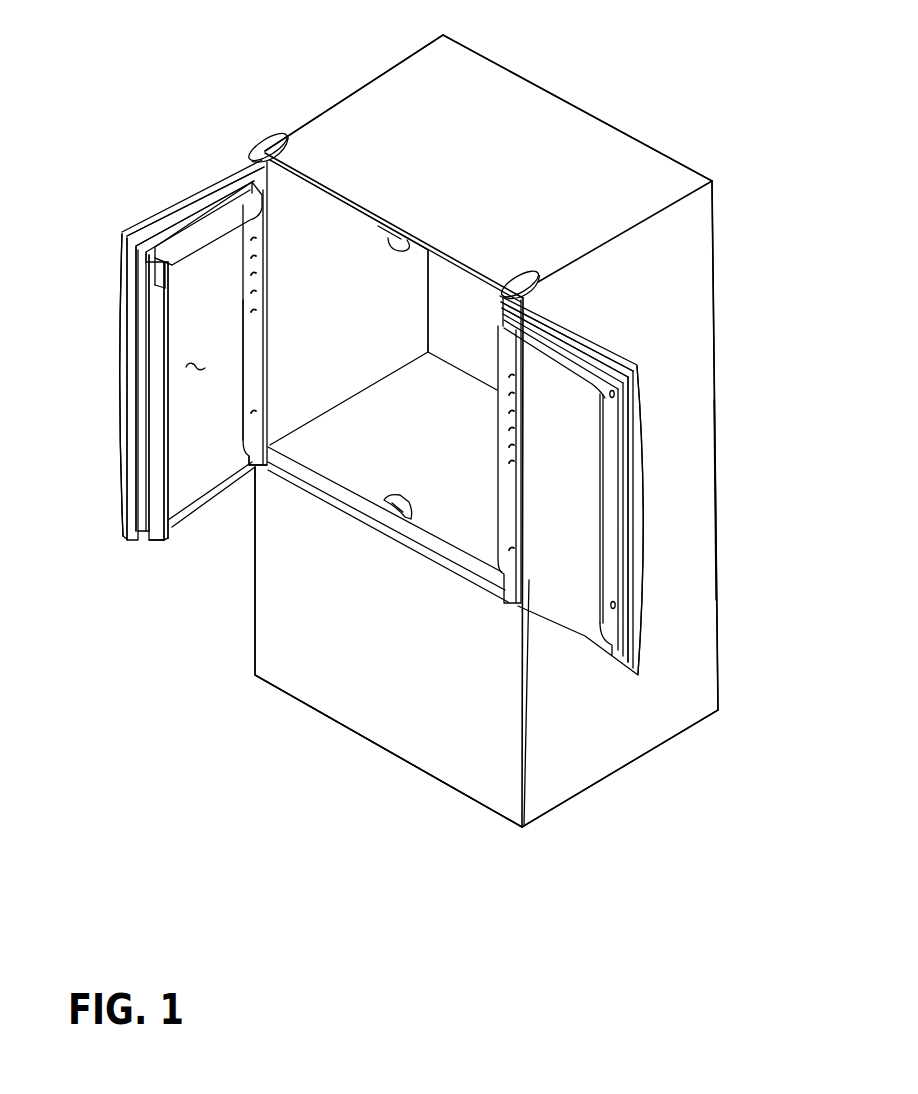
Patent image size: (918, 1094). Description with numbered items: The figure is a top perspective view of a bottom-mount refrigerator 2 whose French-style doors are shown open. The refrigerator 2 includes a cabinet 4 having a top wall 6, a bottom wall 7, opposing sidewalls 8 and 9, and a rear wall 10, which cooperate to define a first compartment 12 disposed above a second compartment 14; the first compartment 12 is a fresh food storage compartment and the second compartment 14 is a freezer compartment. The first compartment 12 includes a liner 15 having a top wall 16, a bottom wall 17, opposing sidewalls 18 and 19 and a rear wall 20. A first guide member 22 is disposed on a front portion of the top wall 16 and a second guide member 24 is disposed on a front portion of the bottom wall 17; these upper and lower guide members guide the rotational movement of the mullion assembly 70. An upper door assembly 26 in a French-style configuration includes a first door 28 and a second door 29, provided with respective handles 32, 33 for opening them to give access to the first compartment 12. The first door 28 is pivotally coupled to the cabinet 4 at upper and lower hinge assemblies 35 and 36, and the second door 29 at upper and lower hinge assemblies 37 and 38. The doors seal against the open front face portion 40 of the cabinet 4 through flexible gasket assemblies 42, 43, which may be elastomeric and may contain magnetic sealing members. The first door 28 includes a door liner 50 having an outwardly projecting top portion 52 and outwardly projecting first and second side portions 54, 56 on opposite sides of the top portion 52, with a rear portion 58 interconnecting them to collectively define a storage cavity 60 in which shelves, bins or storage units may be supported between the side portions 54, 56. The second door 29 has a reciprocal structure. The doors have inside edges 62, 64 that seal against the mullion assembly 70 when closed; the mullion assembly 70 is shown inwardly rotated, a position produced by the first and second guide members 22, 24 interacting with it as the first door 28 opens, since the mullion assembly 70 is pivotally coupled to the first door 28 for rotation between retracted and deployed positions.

The bottom-mount refrigerator 2 is at (287, 84).
The cabinet 4 is at (631, 137).
The top wall 6 is at (548, 130).
The bottom wall 7 is at (592, 790).
The sidewall 8 is at (378, 75).
The sidewall 9 is at (673, 270).
The rear wall 10 is at (717, 463).
The first compartment 12 is at (362, 249).
The second compartment 14 is at (451, 738).
The liner 15 is at (308, 424).
The top wall 16 is at (340, 210).
The bottom wall 17 is at (434, 436).
The sidewall 18 is at (376, 309).
The sidewall 19 is at (490, 524).
The rear wall 20 is at (469, 314).
The first guide member 22 is at (410, 245).
The second guide member 24 is at (412, 519).
The upper door assembly 26 is at (140, 548).
The first door 28 is at (148, 215).
The second door 29 is at (618, 349).
The handle 32 is at (117, 400).
The handle 33 is at (647, 557).
The upper hinge assembly 35 is at (258, 139).
The lower hinge assembly 36 is at (267, 475).
The upper hinge assembly 37 is at (523, 277).
The lower hinge assembly 38 is at (507, 613).
The open front face portion 40 is at (441, 242).
The flexible gasket assembly 42 is at (225, 185).
The flexible gasket assembly 43 is at (640, 397).
The door liner 50 is at (166, 508).
The top portion 52 is at (200, 227).
The first side portion 54 is at (148, 258).
The second side portion 56 is at (190, 468).
The rear portion 58 is at (185, 304).
The storage cavity 60 is at (253, 375).
The inside edge 62 is at (128, 323).
The inside edge 64 is at (637, 447).
The mullion assembly 70 is at (167, 544).